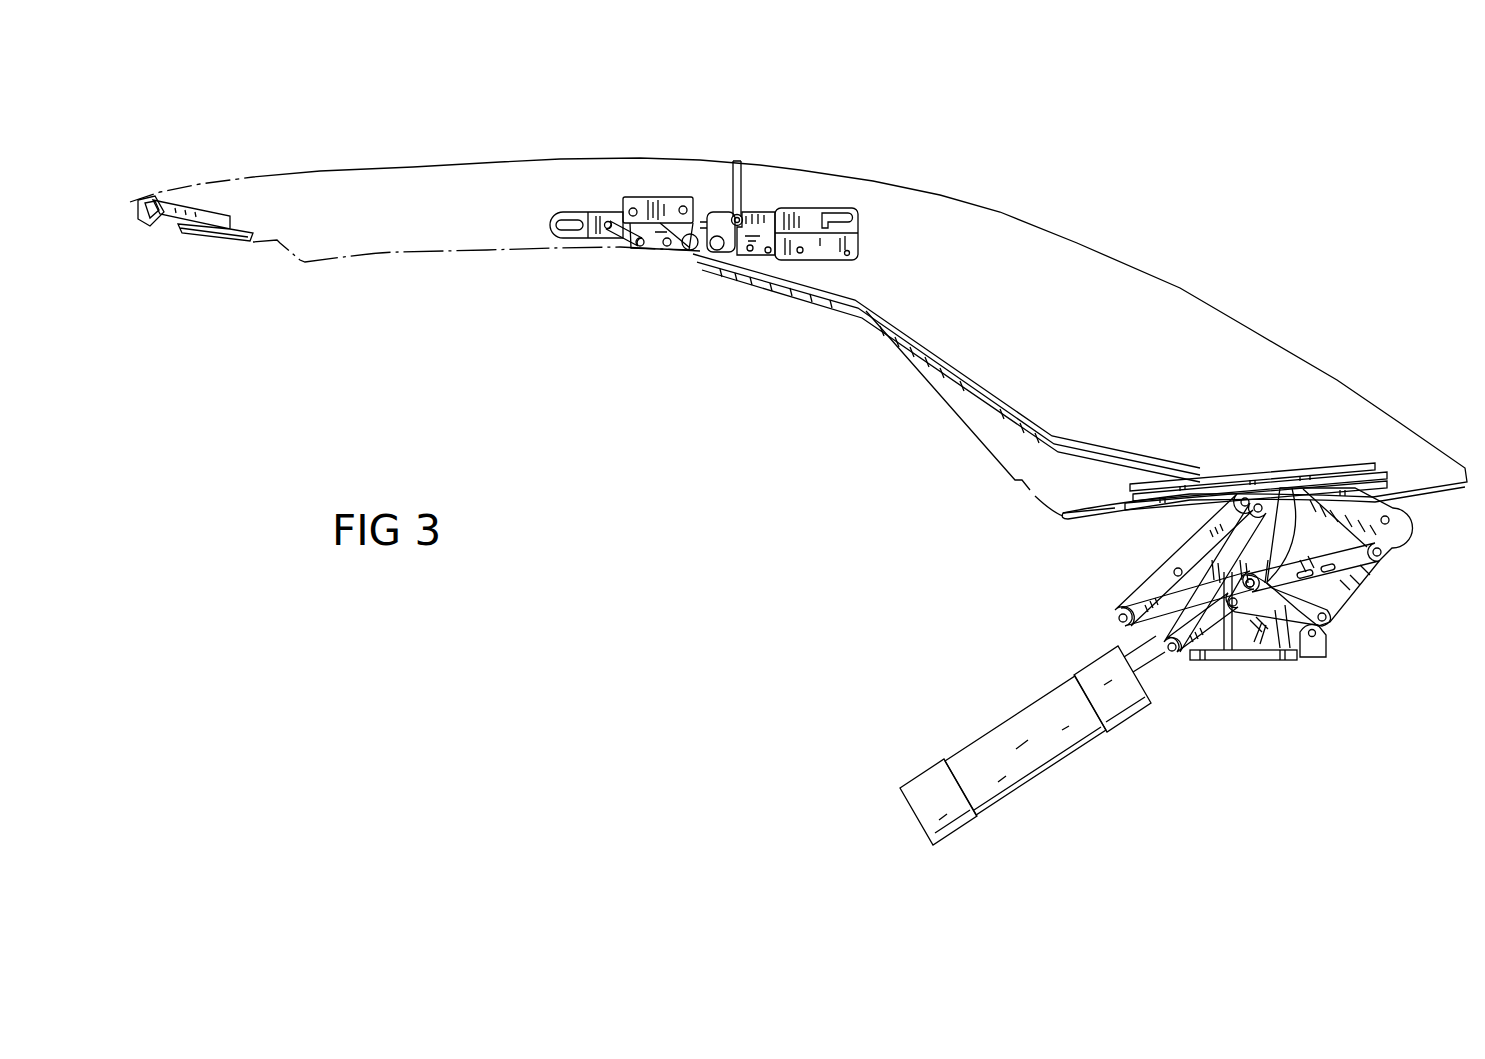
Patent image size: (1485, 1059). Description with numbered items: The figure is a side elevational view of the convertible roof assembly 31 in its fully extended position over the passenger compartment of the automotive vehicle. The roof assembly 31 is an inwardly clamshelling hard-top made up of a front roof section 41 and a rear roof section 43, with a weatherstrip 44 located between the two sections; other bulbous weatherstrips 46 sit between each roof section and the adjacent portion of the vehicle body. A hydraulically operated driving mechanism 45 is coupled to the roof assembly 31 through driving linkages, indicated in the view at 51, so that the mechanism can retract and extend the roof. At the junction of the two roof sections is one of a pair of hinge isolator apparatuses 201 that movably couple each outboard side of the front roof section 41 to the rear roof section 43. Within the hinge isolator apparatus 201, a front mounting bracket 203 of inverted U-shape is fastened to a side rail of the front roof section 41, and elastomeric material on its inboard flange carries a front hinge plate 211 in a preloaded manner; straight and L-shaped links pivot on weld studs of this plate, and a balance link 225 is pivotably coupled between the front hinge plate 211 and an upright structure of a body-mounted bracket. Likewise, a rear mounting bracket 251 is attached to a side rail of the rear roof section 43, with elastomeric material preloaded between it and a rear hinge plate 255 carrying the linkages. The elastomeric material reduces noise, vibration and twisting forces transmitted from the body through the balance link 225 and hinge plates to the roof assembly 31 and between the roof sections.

The convertible roof assembly 31 is at (759, 128).
The front roof section 41 is at (407, 167).
The rear roof section 43 is at (1077, 240).
The weatherstrip 44 is at (733, 193).
The hydraulically operated driving mechanism 45 is at (1152, 738).
The bulbous weatherstrips 46 is at (1095, 518).
The linkage assembly 51 is at (1390, 592).
The hinge isolator apparatus 201 is at (624, 285).
The front mounting bracket 203 is at (633, 197).
The front hinge plate 211 is at (577, 217).
The balance link 225 is at (953, 373).
The rear mounting bracket 251 is at (810, 220).
The rear hinge plate 255 is at (760, 233).